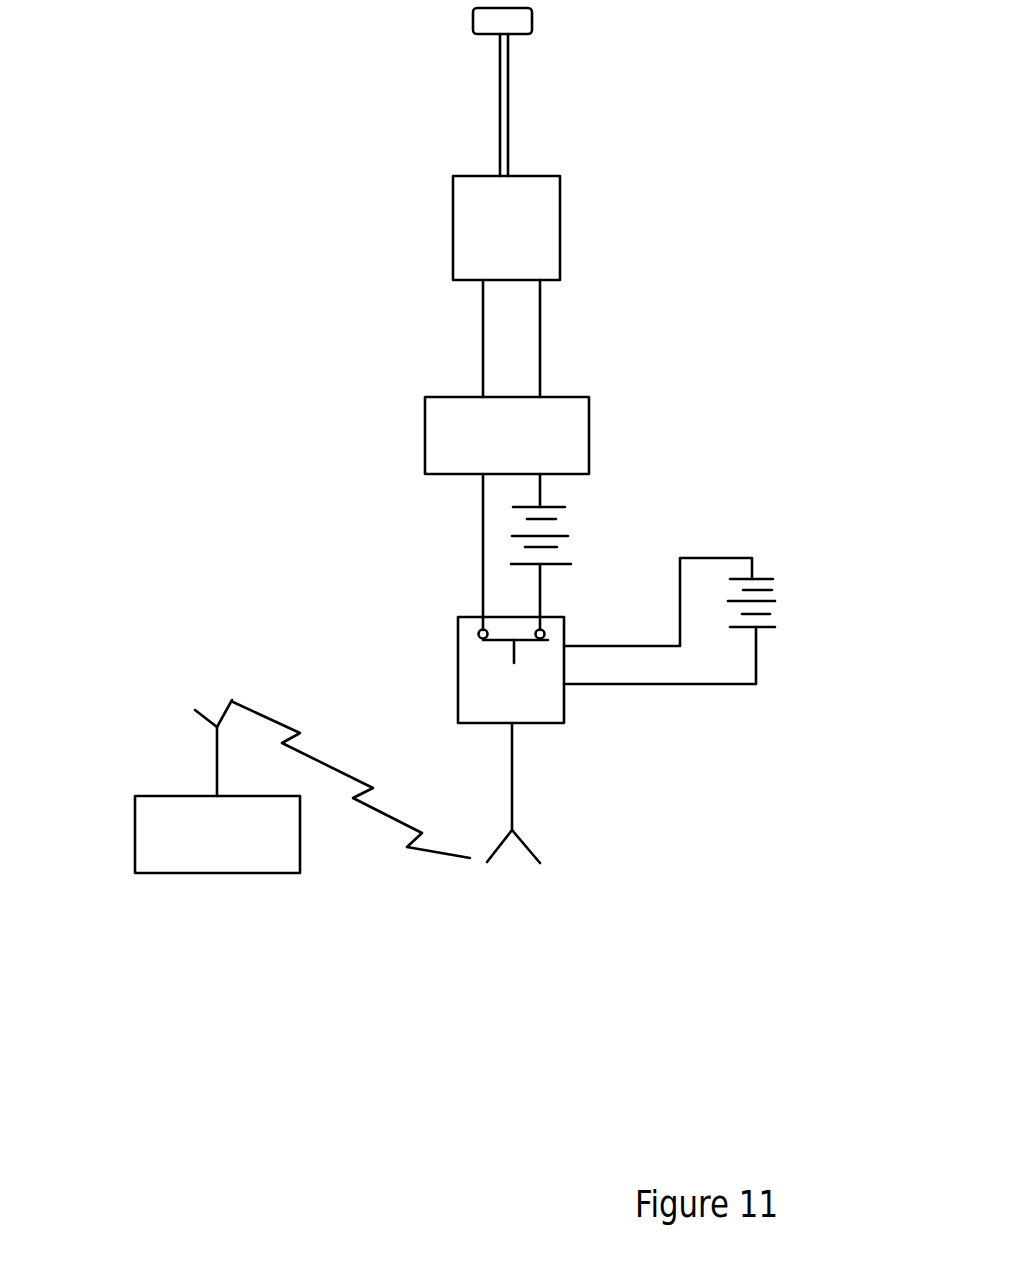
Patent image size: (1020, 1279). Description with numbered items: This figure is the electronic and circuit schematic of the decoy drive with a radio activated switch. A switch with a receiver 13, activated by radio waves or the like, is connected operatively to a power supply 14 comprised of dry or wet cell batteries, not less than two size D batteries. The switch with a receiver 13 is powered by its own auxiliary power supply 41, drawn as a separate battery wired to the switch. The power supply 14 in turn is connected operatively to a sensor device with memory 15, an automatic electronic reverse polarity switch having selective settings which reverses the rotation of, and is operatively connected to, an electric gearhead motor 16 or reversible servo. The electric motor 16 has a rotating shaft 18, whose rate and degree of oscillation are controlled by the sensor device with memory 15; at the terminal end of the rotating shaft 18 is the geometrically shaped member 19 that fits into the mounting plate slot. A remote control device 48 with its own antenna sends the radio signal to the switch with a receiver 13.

The switch with a receiver 13 is at (491, 692).
The power supply 14 is at (568, 546).
The sensor device with memory 15 is at (560, 425).
The electric gearhead motor 16 is at (527, 213).
The rotating shaft 18 is at (509, 104).
The geometrically shaped member 19 is at (520, 17).
The auxiliary power supply 41 is at (776, 617).
The remote control device 48 is at (185, 834).